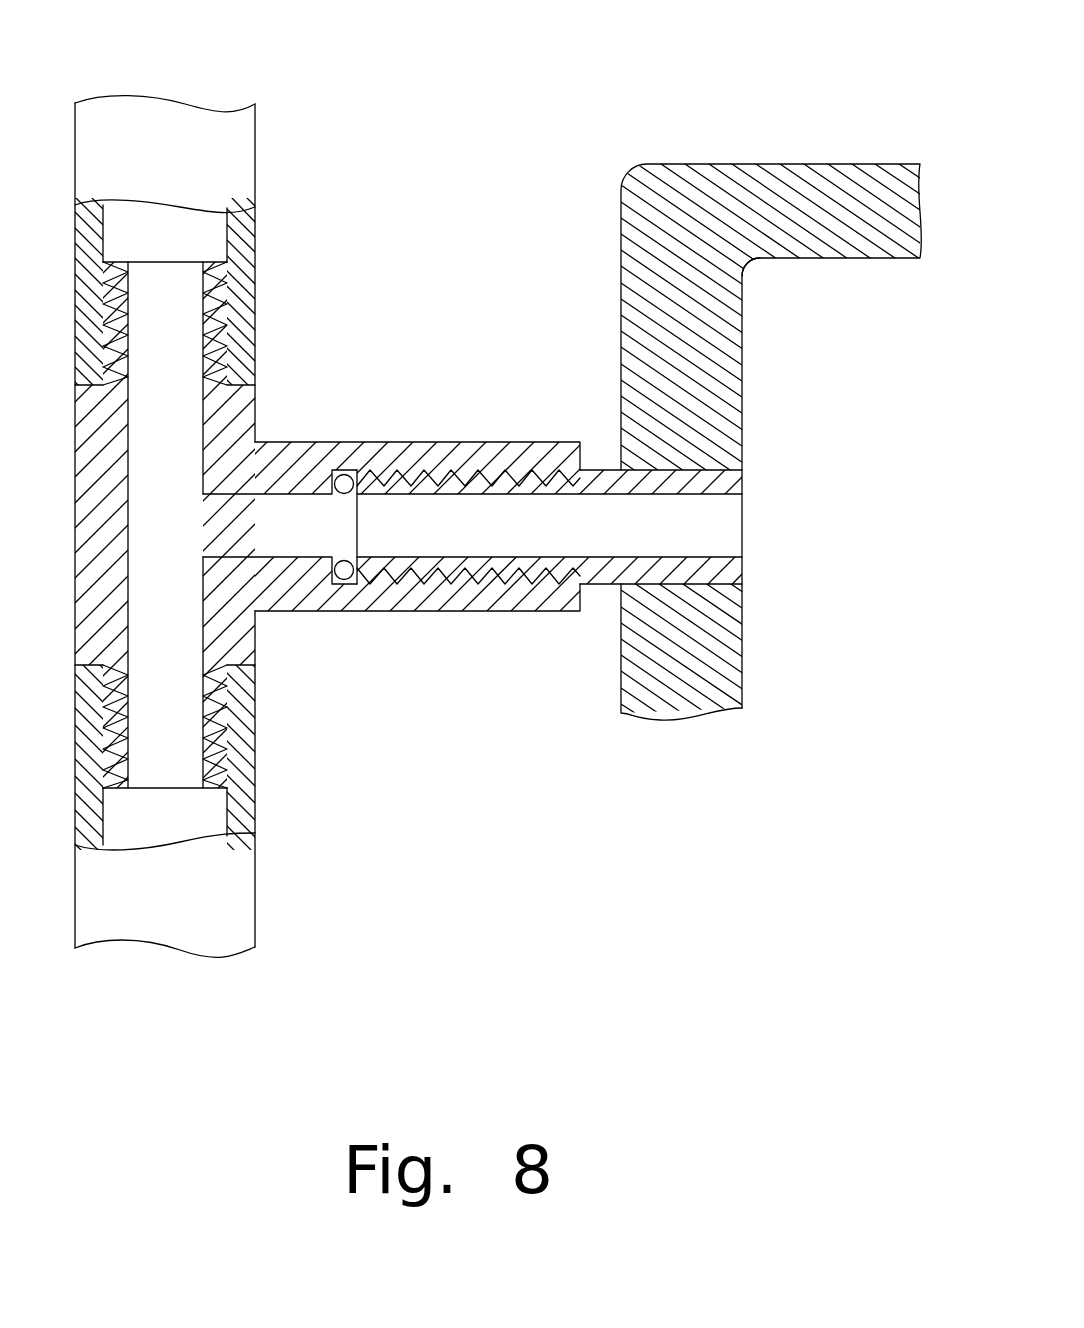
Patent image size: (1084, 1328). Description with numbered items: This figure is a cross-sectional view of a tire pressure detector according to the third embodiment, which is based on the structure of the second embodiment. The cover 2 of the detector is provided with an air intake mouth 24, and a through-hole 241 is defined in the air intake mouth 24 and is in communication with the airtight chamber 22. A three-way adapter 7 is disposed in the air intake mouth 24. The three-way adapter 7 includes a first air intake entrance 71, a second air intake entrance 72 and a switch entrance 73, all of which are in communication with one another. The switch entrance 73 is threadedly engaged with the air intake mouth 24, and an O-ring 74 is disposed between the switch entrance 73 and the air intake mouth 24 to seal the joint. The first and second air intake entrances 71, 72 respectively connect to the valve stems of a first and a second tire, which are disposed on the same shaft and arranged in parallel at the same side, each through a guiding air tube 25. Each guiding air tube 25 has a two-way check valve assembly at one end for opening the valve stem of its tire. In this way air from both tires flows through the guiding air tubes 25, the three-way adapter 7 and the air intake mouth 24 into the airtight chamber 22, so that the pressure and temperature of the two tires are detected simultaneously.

The cover 2 is at (802, 126).
The airtight chamber 22 is at (782, 295).
The air intake mouth 24 is at (442, 563).
The through-hole 241 is at (523, 528).
The guiding air tube 25 is at (228, 150).
The three-way adapter 7 is at (325, 393).
The first air intake entrance 71 is at (162, 306).
The second air intake entrance 72 is at (167, 743).
The switch entrance 73 is at (275, 527).
The O-ring 74 is at (344, 470).